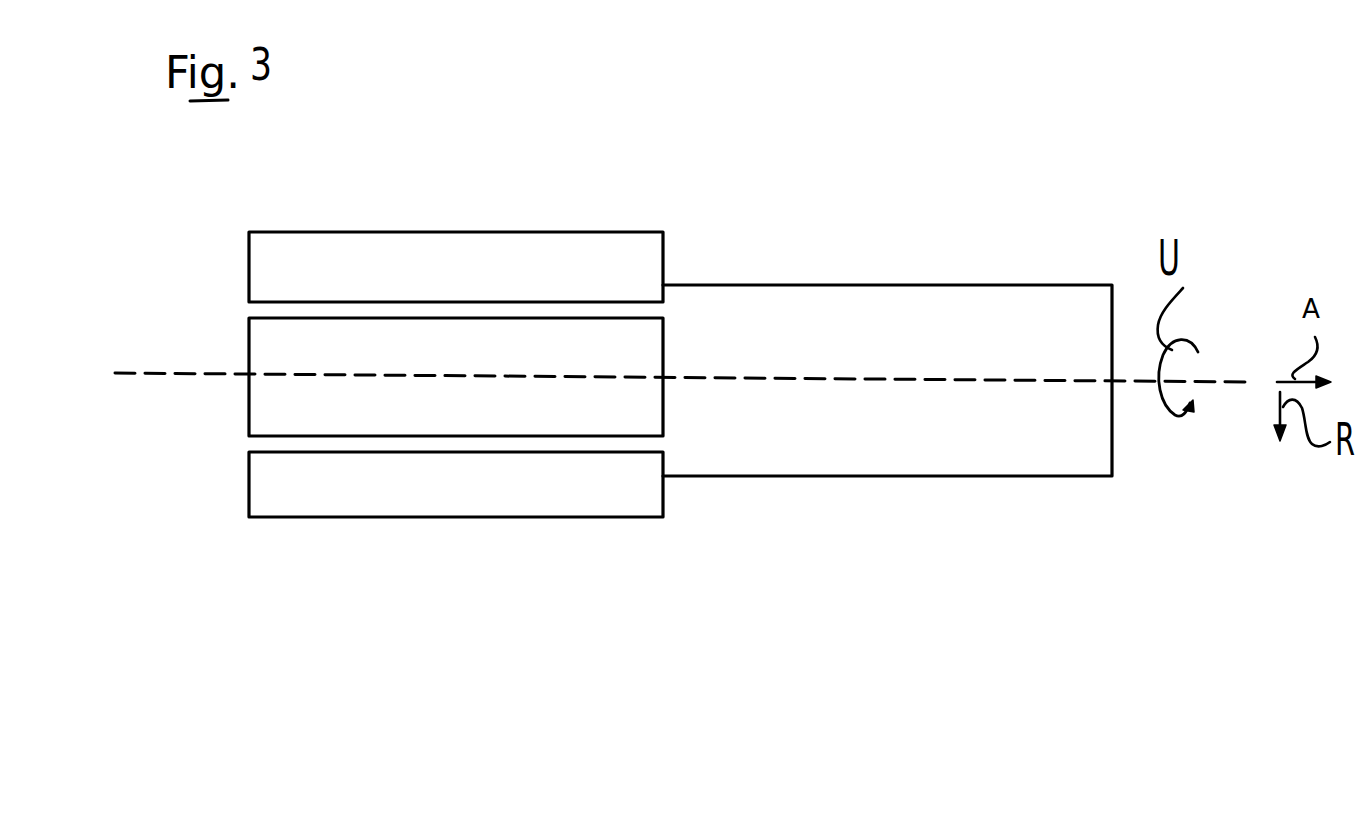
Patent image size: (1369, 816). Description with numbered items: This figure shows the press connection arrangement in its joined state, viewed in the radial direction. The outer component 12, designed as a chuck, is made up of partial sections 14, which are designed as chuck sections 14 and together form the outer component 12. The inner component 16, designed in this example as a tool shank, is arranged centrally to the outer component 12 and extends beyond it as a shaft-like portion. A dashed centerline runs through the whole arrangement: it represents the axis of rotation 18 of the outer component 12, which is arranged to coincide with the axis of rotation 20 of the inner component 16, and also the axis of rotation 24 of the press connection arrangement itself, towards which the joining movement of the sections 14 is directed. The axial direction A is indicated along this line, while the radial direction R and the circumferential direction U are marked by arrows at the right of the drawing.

The outer component 12 is at (486, 257).
The partial sections 14 is at (633, 257).
The inner component 16 is at (884, 310).
The axis of rotation 18 is at (150, 374).
The axis of rotation 20 is at (170, 373).
The axis of rotation 24 is at (218, 374).